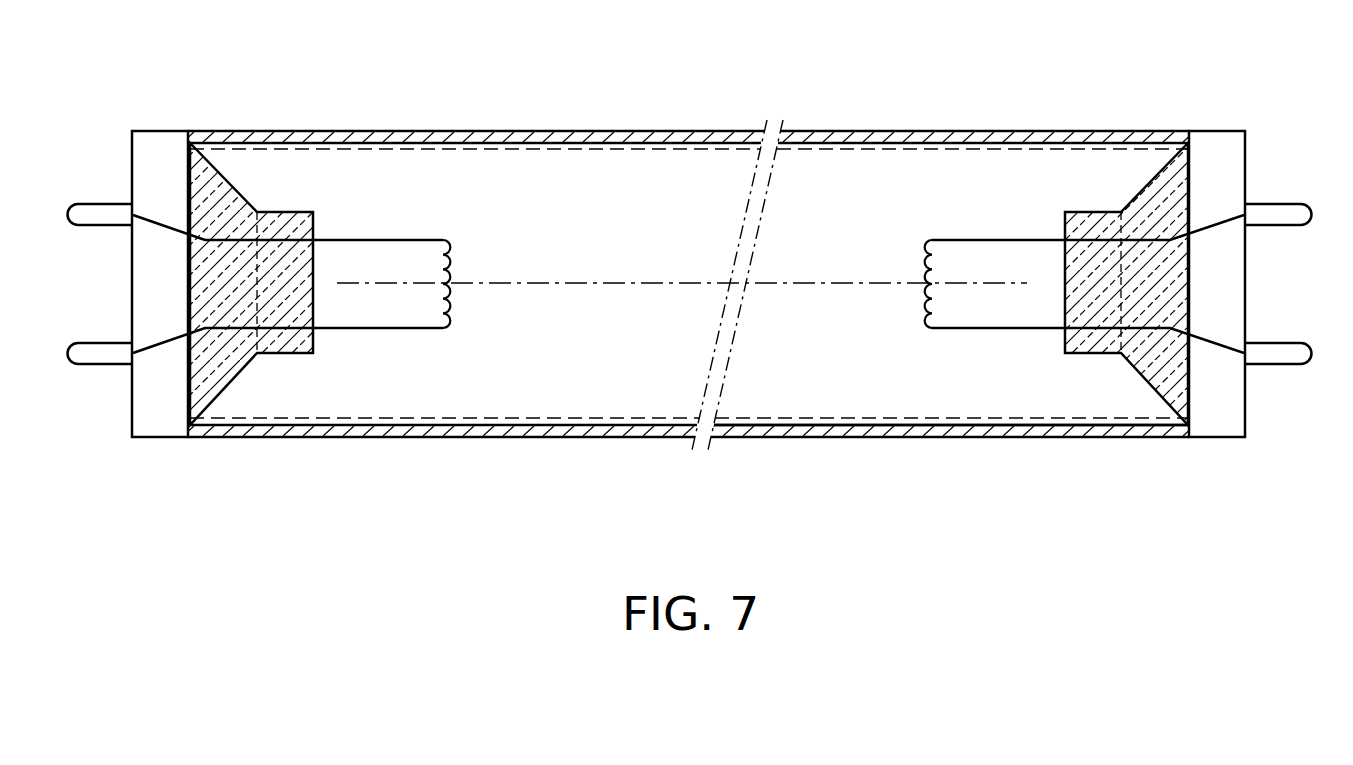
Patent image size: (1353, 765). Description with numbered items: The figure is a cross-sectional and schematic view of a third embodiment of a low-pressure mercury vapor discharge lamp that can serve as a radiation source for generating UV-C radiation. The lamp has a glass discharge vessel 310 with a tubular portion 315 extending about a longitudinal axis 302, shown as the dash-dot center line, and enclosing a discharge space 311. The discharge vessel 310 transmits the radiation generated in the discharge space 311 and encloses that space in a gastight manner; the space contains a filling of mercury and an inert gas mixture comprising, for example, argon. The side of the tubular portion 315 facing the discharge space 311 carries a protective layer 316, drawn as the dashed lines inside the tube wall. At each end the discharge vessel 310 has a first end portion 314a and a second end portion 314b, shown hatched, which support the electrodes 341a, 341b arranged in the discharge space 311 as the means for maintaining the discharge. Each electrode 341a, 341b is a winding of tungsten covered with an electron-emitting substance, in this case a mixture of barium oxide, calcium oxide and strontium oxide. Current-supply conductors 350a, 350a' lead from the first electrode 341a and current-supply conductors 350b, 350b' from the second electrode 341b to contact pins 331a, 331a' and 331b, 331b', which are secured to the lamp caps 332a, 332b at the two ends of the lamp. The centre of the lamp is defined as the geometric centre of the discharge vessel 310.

The glass discharge vessel 310 is at (938, 92).
The discharge space 311 is at (507, 395).
The tubular portion 315 is at (775, 430).
The protective layer 316 is at (452, 420).
The longitudinal axis 302 is at (833, 282).
The first end portion 314a is at (217, 190).
The second end portion 314b is at (1157, 198).
The lamp cap 332a is at (132, 152).
The lamp cap 332b is at (1247, 152).
The contact pin 331a is at (96, 243).
The contact pin 331a' is at (94, 381).
The contact pin 331b is at (1282, 243).
The contact pin 331b' is at (1284, 381).
The current-supply conductor 350a is at (288, 212).
The current-supply conductor 350a' is at (288, 355).
The current-supply conductor 350b is at (1088, 212).
The current-supply conductor 350b' is at (1088, 355).
The electrode 341a is at (444, 240).
The electrode 341b is at (935, 240).